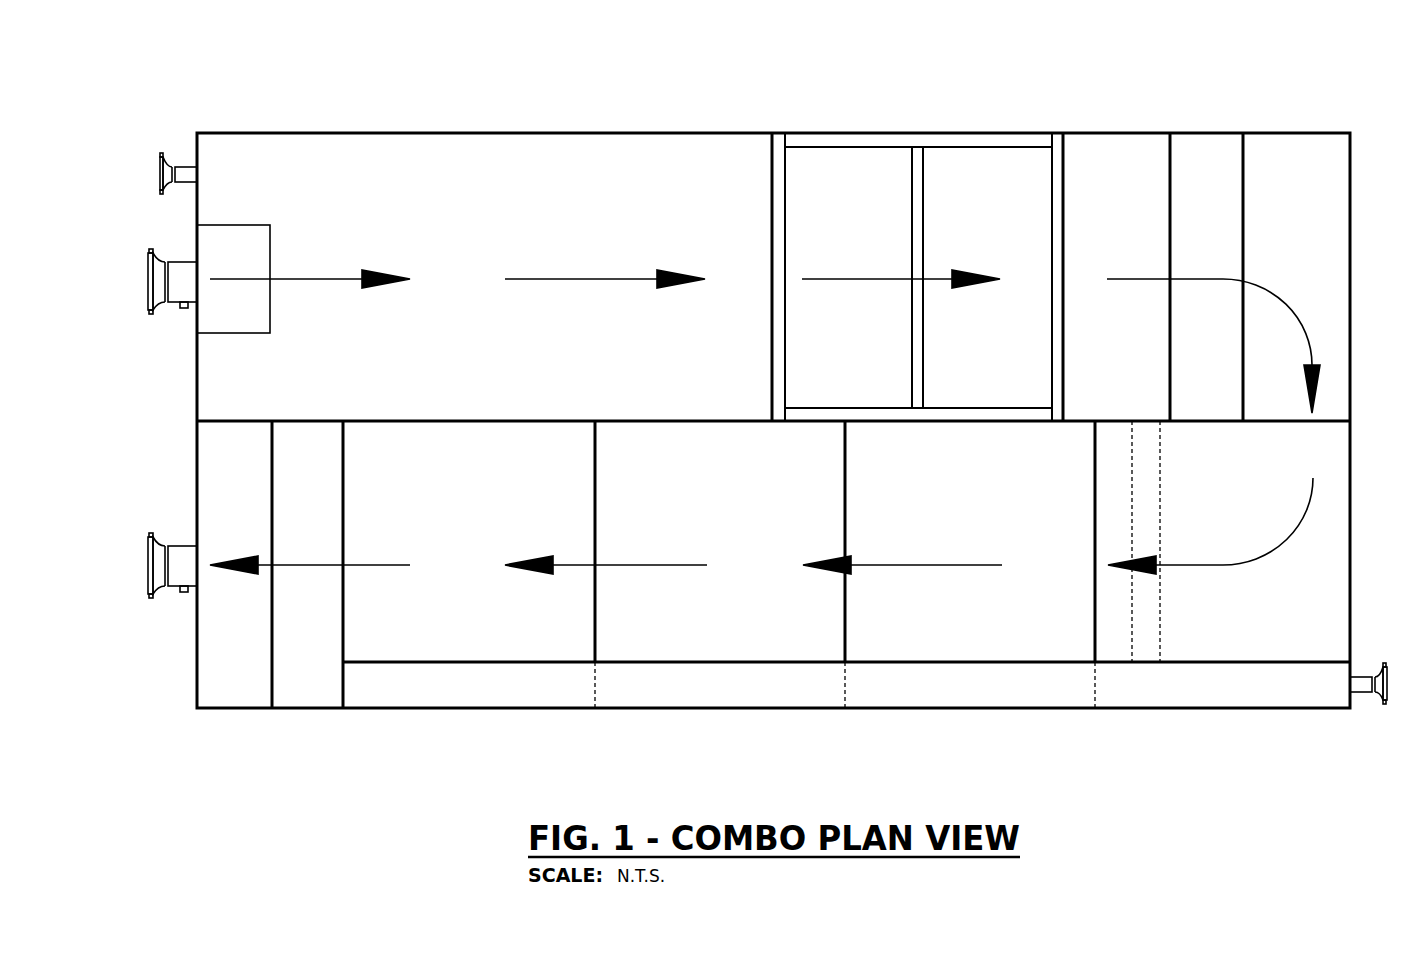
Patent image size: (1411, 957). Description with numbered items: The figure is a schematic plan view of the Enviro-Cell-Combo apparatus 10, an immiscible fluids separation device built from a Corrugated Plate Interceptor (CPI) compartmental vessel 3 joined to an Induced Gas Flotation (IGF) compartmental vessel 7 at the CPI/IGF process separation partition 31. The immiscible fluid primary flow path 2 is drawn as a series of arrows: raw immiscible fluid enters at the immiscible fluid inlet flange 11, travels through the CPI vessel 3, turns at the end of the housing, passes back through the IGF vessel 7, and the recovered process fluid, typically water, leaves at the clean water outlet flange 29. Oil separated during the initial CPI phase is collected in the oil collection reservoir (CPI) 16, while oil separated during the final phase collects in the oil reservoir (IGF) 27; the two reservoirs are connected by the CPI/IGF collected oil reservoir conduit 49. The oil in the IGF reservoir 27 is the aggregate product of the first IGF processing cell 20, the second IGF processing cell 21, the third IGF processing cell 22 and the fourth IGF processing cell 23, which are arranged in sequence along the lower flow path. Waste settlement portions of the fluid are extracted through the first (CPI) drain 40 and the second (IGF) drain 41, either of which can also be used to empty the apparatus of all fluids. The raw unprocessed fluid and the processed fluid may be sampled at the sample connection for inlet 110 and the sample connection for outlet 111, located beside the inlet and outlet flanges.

The Enviro-Cell-Combo apparatus 10 is at (428, 802).
The immiscible fluid primary flow path 2 is at (588, 280).
The Corrugated Plate Interceptor (CPI) compartmental vessel 3 is at (712, 132).
The Induced Gas Flotation (IGF) compartmental vessel 7 is at (905, 710).
The immiscible fluid inlet flange 11 is at (145, 287).
The sample connection for inlet 110 is at (183, 312).
The oil collection reservoir (CPI) 16 is at (1127, 227).
The IGF processing cell #1 20 is at (1213, 587).
The IGF processing cell #2 21 is at (1033, 542).
The IGF processing cell #3 22 is at (747, 543).
The IGF processing cell #4 23 is at (465, 543).
The oil reservoir (IGF) 27 is at (982, 678).
The clean water outlet flange 29 is at (145, 568).
The sample connection for outlet 111 is at (183, 597).
The CPI/IGF process separation partition 31 is at (672, 423).
The first (CPI) drain 40 is at (162, 151).
The second (IGF) drain 41 is at (1386, 705).
The CPI/IGF collected oil reservoir conduit 49 is at (1162, 503).